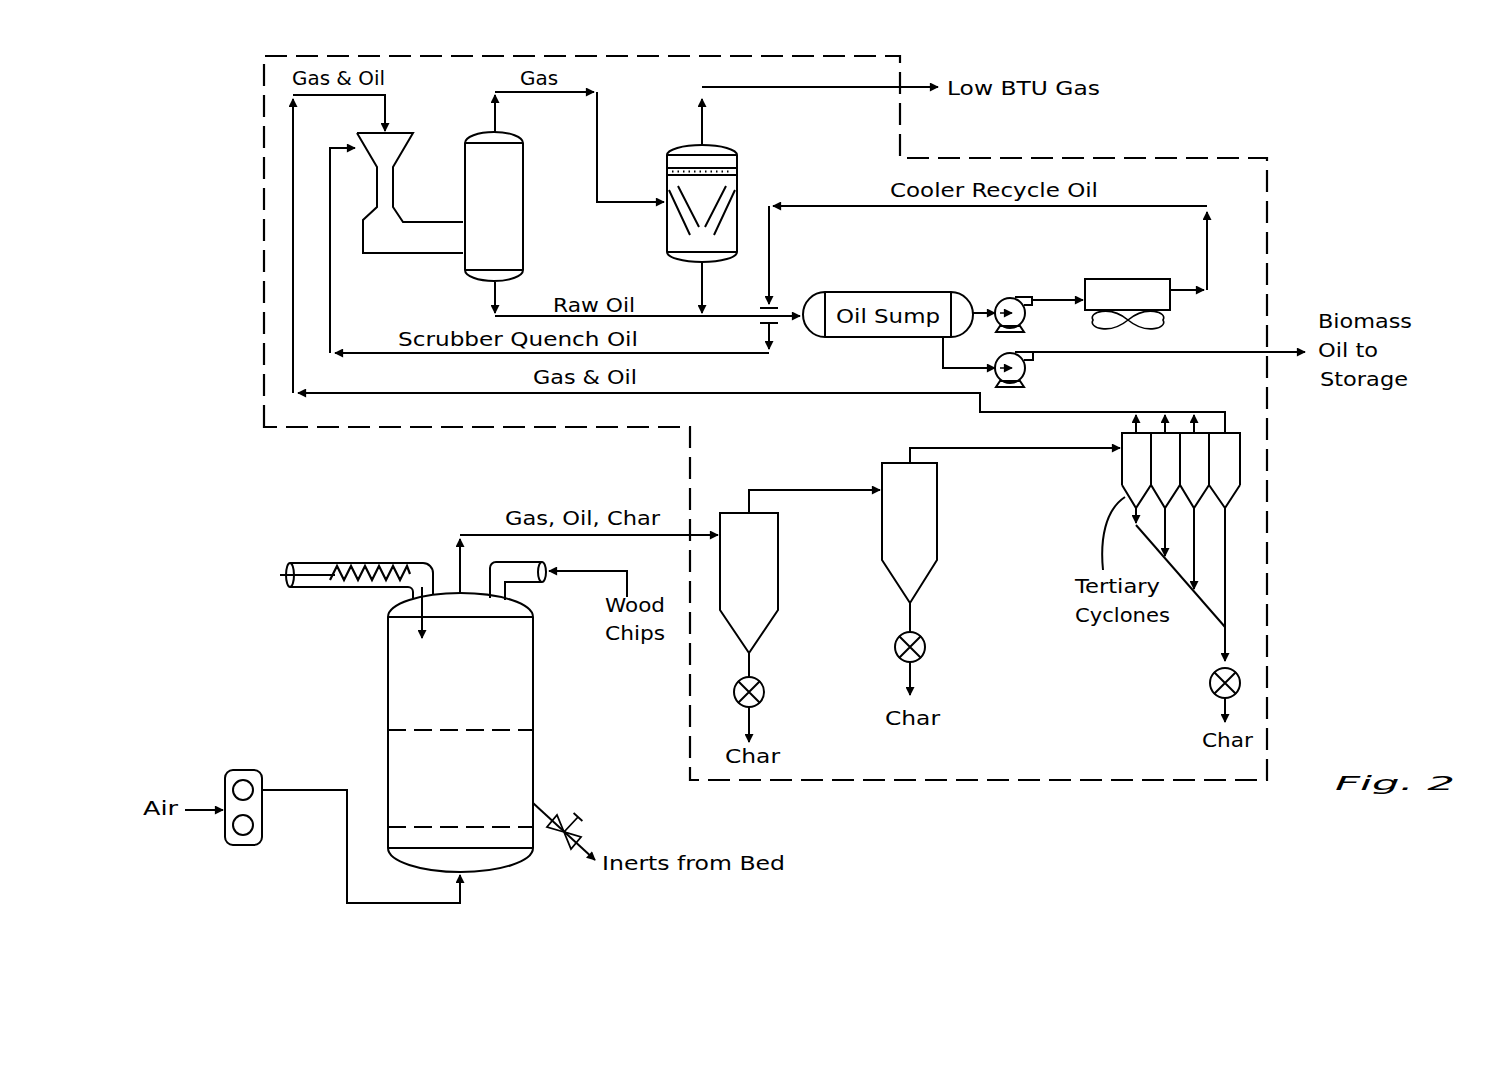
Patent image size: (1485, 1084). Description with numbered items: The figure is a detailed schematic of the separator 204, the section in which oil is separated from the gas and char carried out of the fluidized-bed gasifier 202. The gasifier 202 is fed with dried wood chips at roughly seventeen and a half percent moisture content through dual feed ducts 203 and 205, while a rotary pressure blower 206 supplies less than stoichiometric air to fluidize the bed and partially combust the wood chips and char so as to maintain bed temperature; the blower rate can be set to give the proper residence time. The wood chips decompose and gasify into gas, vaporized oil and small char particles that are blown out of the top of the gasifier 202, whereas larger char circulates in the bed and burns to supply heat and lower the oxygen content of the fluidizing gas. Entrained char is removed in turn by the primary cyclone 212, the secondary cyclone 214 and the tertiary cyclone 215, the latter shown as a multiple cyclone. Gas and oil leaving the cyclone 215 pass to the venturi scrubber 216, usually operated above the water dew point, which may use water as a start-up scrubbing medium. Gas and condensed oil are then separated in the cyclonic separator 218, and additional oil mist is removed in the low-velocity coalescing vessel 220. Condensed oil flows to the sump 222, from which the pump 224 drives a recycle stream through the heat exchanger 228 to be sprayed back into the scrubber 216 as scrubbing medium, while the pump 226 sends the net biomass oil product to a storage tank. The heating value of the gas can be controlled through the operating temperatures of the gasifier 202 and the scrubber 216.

The fluidized-bed gasifier 202 is at (388, 706).
The feed duct 203 is at (408, 590).
The separator 204 is at (1268, 492).
The feed duct 205 is at (507, 590).
The rotary pressure blower 206 is at (233, 770).
The primary cyclone 212 is at (778, 570).
The secondary cyclone 214 is at (937, 493).
The tertiary cyclone 215 is at (1240, 445).
The venturi scrubber 216 is at (397, 199).
The cyclonic separator 218 is at (523, 178).
The low-velocity coalescing vessel 220 is at (725, 143).
The sump 222 is at (853, 290).
The pump 224 is at (1016, 297).
The pump 226 is at (1024, 379).
The heat exchanger 228 is at (1170, 300).